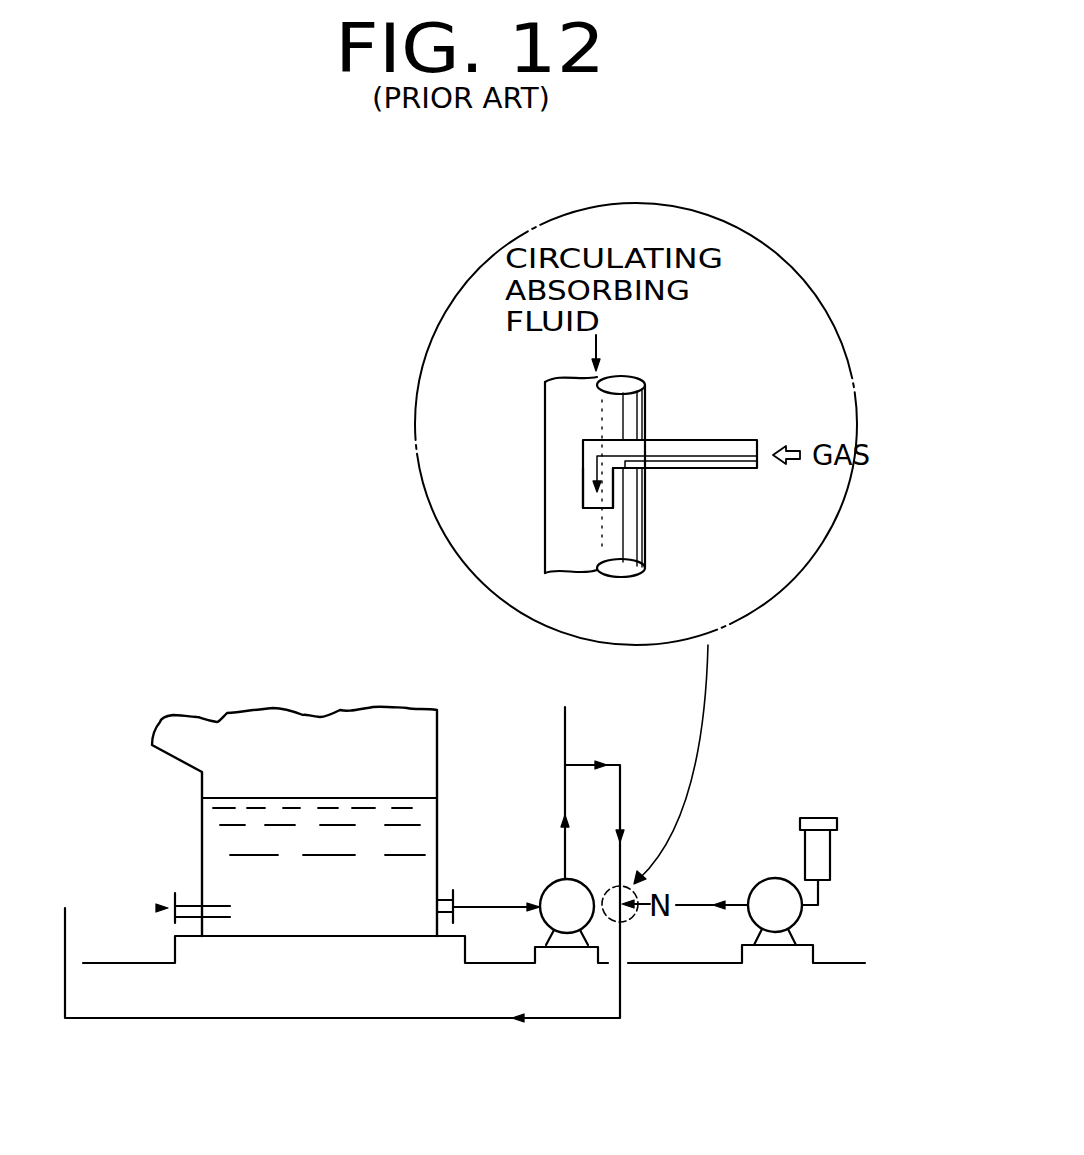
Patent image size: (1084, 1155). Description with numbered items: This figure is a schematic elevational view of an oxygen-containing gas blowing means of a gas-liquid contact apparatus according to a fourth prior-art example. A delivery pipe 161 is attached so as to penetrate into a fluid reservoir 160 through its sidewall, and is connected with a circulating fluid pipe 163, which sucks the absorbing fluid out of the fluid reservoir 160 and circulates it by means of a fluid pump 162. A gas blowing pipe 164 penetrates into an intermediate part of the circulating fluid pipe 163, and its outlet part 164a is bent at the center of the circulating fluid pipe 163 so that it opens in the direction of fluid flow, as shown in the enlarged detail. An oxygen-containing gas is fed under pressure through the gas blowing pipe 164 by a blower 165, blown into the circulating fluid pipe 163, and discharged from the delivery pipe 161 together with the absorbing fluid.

The fluid reservoir 160 is at (217, 838).
The delivery pipe 161 is at (218, 903).
The fluid pump 162 is at (548, 886).
The circulating fluid pipe 163 is at (545, 418).
The gas blowing pipe 164 is at (712, 470).
The outlet part 164a is at (583, 492).
The blower 165 is at (802, 912).